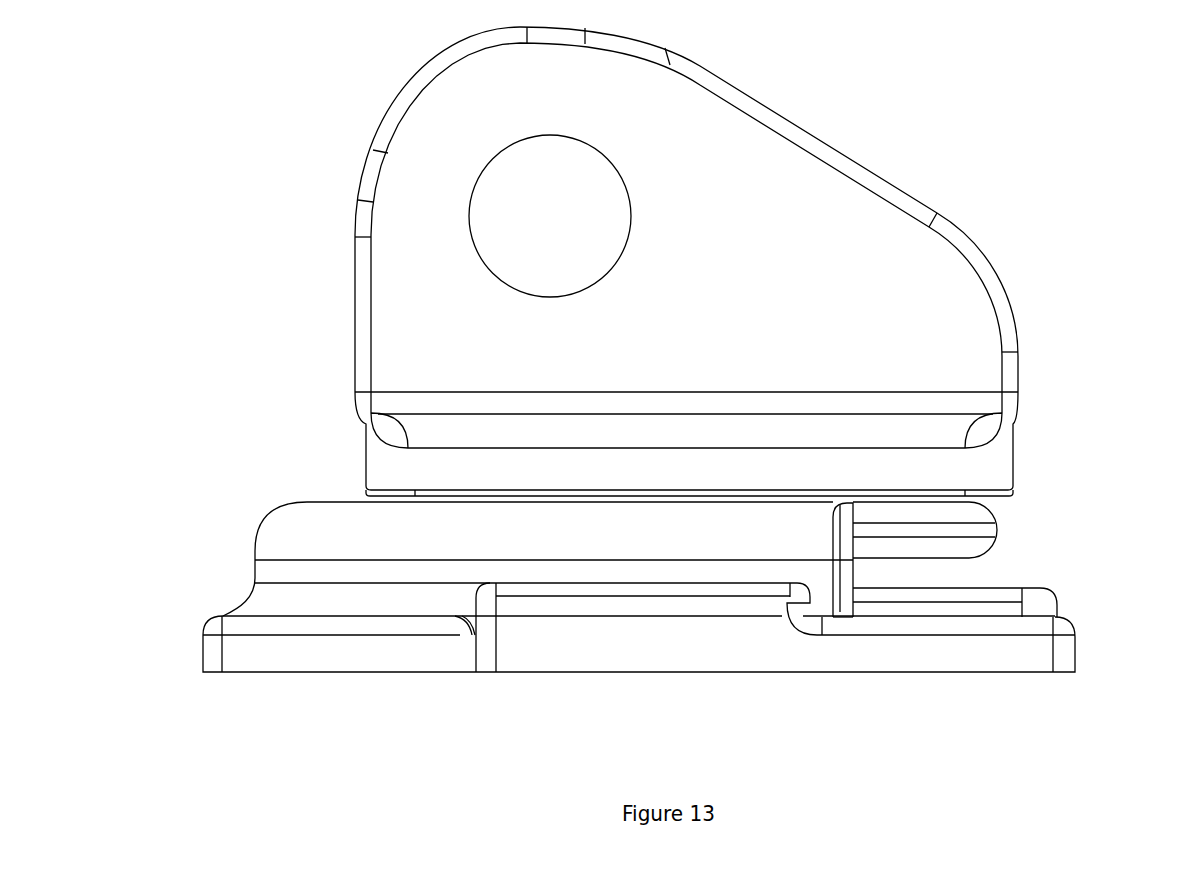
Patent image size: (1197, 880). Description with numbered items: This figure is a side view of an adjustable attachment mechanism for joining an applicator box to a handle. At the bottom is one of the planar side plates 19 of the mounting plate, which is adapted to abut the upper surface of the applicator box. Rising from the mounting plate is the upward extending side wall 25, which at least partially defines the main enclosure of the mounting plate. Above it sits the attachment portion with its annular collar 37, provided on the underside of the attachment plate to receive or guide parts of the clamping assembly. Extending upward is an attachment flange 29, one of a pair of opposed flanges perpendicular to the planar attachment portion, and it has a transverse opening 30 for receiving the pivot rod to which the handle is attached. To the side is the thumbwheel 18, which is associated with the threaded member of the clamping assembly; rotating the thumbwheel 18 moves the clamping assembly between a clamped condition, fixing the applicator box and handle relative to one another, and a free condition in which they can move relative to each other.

The thumbwheel 18 is at (1009, 534).
The side plate 19 is at (190, 650).
The upward extending side wall 25 is at (276, 568).
The attachment flange 29 is at (391, 316).
The transverse opening 30 is at (503, 206).
The annular collar 37 is at (366, 470).